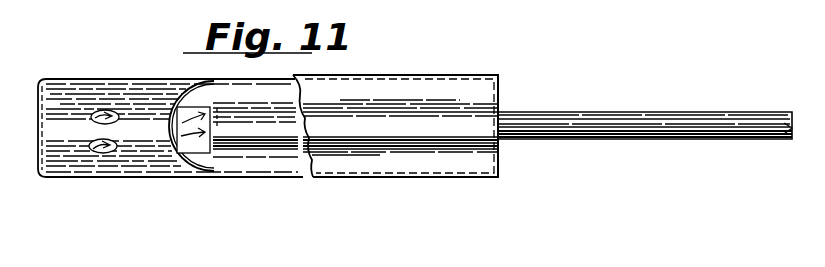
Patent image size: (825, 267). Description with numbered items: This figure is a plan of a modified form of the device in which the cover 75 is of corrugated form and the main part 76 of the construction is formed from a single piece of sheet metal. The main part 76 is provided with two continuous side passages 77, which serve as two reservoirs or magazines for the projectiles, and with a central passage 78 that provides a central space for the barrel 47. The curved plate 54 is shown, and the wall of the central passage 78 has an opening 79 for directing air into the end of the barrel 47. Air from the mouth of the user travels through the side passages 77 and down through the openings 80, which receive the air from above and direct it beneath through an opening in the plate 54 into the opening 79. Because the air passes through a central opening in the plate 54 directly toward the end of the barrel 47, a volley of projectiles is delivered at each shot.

The barrel 47 is at (604, 138).
The curved plate 54 is at (186, 93).
The cover 75 is at (403, 178).
The main part 76 is at (277, 163).
The side passages 77 is at (263, 90).
The central passage 78 is at (152, 128).
The opening 79 is at (193, 152).
The openings 80 is at (104, 117).